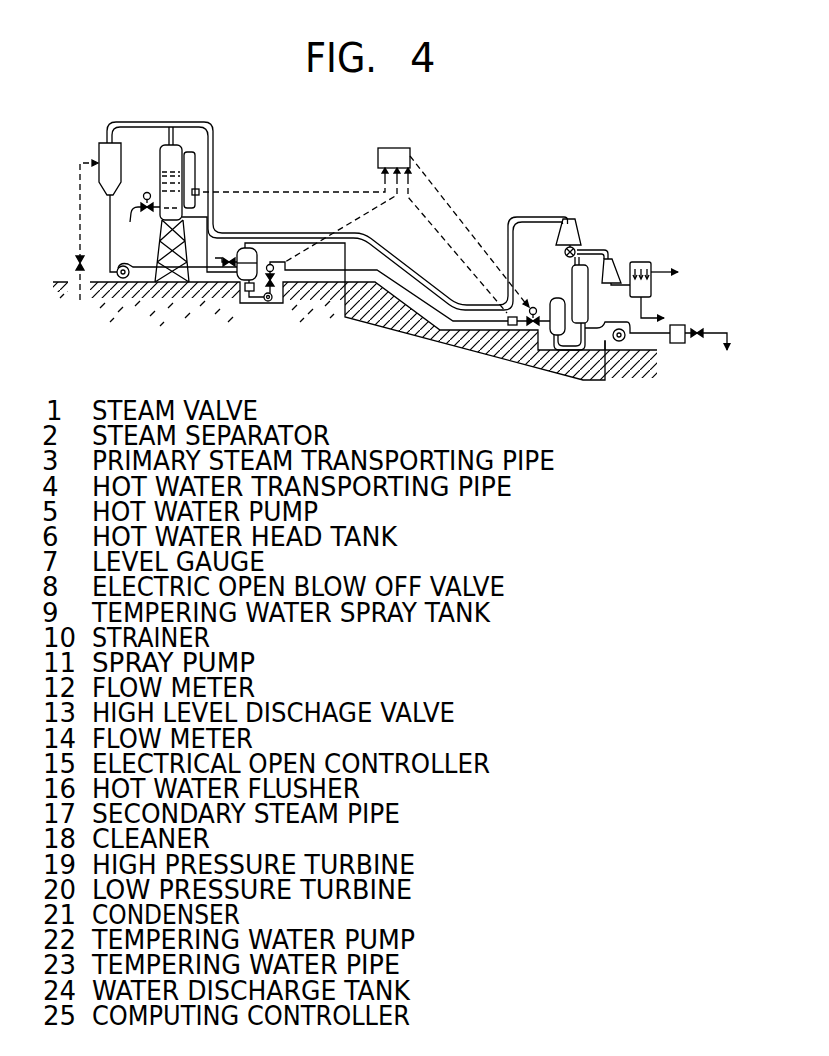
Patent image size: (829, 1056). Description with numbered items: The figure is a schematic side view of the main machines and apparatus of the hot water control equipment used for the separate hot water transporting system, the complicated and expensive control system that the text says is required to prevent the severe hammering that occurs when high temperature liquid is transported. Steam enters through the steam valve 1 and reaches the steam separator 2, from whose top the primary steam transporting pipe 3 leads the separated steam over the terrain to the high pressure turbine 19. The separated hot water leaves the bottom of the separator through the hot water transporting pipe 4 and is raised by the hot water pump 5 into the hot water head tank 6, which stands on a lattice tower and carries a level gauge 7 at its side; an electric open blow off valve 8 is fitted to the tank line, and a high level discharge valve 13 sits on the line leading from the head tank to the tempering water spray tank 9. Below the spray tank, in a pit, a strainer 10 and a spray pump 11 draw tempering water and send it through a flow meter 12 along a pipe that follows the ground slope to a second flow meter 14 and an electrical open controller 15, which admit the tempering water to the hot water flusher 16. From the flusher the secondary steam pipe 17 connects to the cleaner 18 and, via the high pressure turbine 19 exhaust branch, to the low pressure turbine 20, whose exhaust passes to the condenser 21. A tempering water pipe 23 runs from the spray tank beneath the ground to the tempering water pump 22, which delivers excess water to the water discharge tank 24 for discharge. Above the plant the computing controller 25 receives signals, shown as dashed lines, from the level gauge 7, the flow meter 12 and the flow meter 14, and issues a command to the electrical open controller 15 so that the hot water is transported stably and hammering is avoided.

The steam valve 1 is at (87, 246).
The steam separator 2 is at (99, 151).
The primary steam transporting pipe 3 is at (150, 122).
The hot water transporting pipe 4 is at (110, 236).
The hot water pump 5 is at (124, 265).
The hot water head tank 6 is at (182, 150).
The level gauge 7 is at (199, 185).
The electric open blow off valve 8 is at (147, 193).
The tempering water spray tank 9 is at (250, 248).
The strainer 10 is at (249, 300).
The spray pump 11 is at (268, 302).
The flow meter 12 is at (283, 260).
The high level discharge valve 13 is at (228, 257).
The flow meter 14 is at (499, 328).
The electrical open controller 15 is at (533, 307).
The hot water flusher 16 is at (557, 298).
The secondary steam pipe 17 is at (589, 328).
The cleaner 18 is at (570, 265).
The high pressure turbine 19 is at (577, 232).
The low pressure turbine 20 is at (612, 262).
The condenser 21 is at (652, 289).
The tempering water pump 22 is at (626, 338).
The tempering water pipe 23 is at (604, 381).
The water discharge tank 24 is at (686, 328).
The computing controller 25 is at (400, 143).